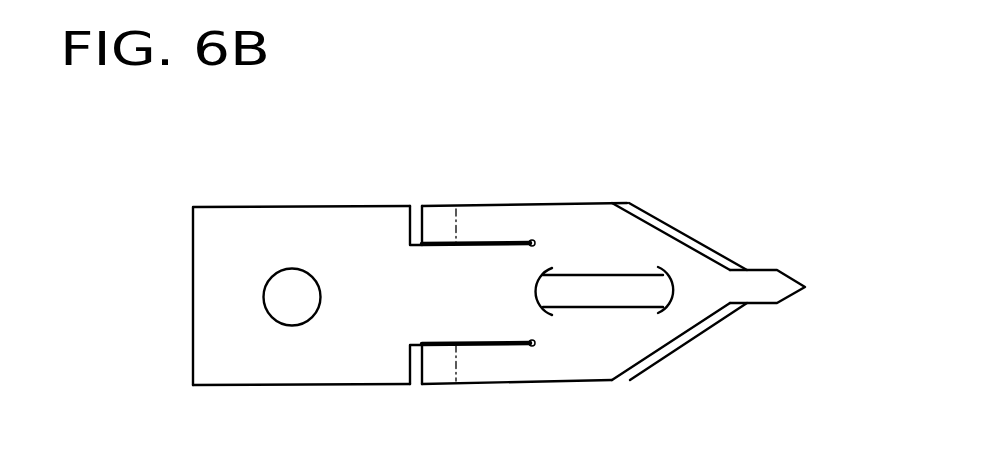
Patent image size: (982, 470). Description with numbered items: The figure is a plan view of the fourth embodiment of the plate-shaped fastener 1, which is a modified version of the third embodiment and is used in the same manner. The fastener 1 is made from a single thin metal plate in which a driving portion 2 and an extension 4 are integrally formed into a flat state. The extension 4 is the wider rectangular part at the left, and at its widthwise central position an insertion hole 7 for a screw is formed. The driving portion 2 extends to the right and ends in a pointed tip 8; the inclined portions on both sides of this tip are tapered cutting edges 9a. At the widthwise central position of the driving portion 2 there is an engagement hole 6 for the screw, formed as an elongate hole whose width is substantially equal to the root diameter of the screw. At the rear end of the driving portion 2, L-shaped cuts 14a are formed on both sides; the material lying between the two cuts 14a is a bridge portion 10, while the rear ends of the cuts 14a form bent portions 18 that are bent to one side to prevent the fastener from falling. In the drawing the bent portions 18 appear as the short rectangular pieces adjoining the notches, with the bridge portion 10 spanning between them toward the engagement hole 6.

The plate-shaped fastener 1 is at (275, 386).
The driving portion 2 is at (582, 360).
The extension 4 is at (339, 228).
The engagement hole 6 is at (592, 290).
The insertion hole 7 is at (277, 297).
The pointed tip 8 is at (805, 287).
The tapered cutting edges 9a is at (672, 235).
The bridge portion 10 is at (452, 289).
The L-shaped cuts 14a is at (493, 243).
The bent portions 18 is at (433, 222).